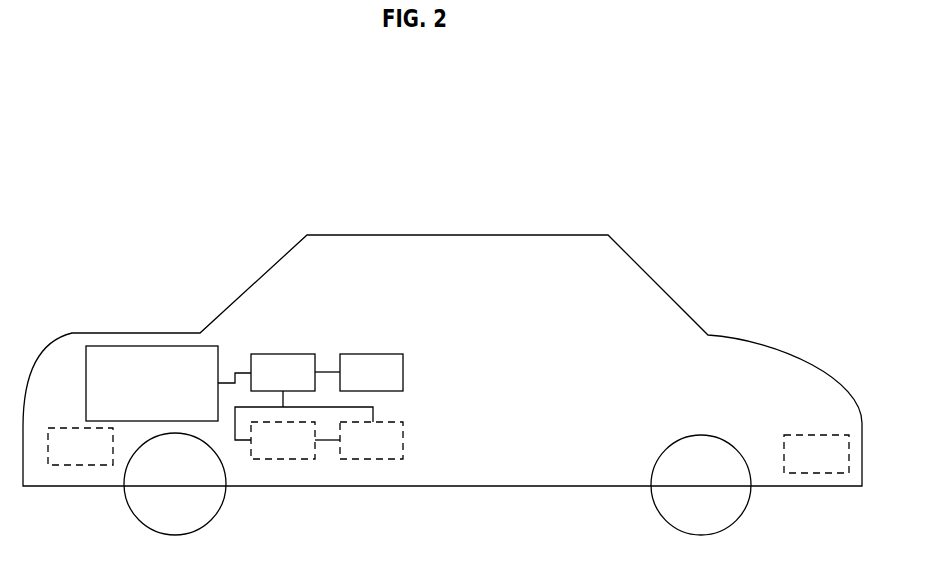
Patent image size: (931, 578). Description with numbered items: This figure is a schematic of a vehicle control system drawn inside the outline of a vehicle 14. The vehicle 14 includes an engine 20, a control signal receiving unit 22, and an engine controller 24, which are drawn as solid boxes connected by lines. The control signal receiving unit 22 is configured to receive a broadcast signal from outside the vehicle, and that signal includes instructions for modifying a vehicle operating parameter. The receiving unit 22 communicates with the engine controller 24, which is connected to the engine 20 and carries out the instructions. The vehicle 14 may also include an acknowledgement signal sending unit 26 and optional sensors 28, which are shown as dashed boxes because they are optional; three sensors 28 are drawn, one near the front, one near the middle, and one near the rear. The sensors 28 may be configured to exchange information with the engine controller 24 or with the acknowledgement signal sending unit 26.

The vehicle 14 is at (415, 260).
The engine 20 is at (115, 363).
The control signal receiving unit 22 is at (361, 365).
The engine controller 24 is at (285, 365).
The acknowledgement signal sending unit 26 is at (267, 452).
The sensors 28 is at (63, 452).